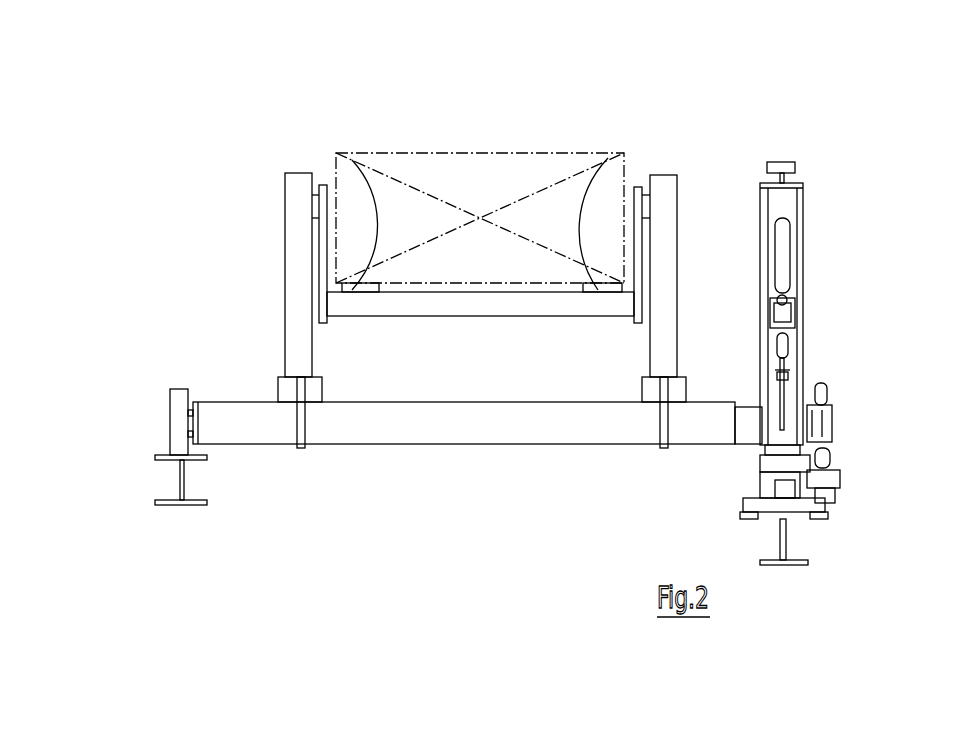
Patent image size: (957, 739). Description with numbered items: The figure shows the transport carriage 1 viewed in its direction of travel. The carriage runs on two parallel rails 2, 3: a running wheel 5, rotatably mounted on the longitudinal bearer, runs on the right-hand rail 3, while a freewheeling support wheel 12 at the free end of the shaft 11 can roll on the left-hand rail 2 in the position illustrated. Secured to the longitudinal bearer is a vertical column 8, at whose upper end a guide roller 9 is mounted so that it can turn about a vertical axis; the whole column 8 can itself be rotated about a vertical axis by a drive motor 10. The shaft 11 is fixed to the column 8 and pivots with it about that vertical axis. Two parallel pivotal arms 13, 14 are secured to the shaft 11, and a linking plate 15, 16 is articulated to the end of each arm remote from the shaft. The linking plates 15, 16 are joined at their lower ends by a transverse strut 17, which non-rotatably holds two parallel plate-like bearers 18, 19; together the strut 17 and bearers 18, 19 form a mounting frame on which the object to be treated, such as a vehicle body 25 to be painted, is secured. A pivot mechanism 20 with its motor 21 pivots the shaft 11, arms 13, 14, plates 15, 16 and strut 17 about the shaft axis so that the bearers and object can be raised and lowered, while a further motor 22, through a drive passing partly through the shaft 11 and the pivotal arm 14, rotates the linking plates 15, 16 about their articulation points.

The transport carriage 1 is at (222, 150).
The rail 2 is at (182, 462).
The rail 3 is at (786, 522).
The running wheel 5 is at (765, 490).
The vertical column 8 is at (803, 232).
The guide roller 9 is at (781, 162).
The drive motor 10 is at (832, 460).
The shaft 11 is at (507, 444).
The support wheel 12 is at (187, 413).
The pivotal arm 13 is at (302, 315).
The pivotal arm 14 is at (663, 350).
The linking plate 15 is at (323, 263).
The linking plate 16 is at (640, 256).
The transverse strut 17 is at (517, 298).
The plate-like bearer 18 is at (352, 160).
The plate-like bearer 19 is at (608, 158).
The pivot mechanism 20 is at (803, 357).
The motor 21 is at (803, 310).
The further motor 22 is at (828, 393).
The vehicle body 25 is at (466, 160).